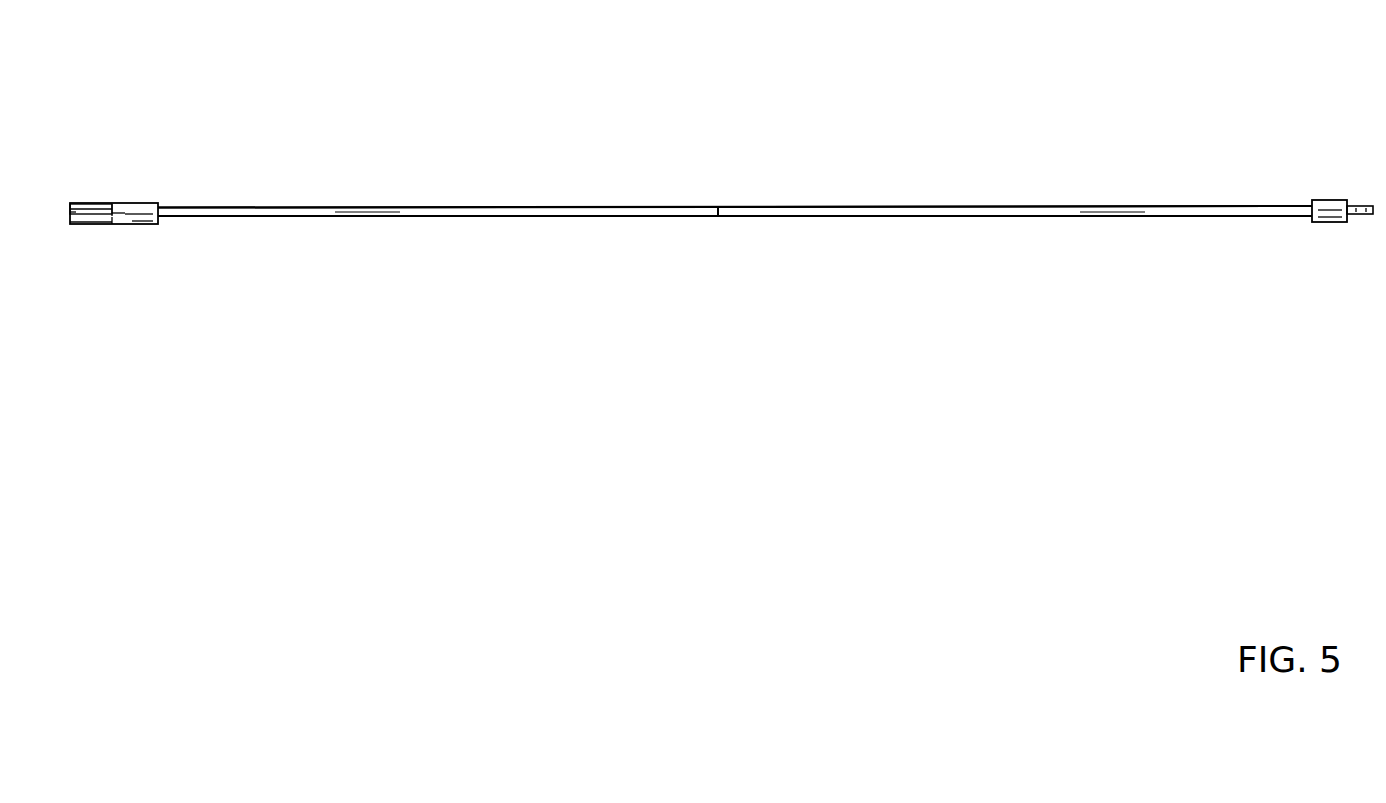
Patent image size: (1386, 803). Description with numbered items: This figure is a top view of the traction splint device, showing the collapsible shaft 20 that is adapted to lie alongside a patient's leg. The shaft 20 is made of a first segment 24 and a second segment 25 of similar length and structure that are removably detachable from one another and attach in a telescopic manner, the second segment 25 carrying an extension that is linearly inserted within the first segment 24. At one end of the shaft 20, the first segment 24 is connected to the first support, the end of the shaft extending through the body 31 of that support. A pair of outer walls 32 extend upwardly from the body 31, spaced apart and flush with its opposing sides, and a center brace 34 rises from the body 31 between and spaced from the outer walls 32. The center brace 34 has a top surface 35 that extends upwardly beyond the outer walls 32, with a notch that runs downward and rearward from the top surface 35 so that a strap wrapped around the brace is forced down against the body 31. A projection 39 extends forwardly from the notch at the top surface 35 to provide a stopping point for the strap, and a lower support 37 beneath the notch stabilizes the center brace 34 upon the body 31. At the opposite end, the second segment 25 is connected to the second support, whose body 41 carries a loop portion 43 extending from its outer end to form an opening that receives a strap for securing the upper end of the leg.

The collapsible shaft 20 is at (718, 300).
The first segment 24 is at (580, 208).
The second segment 25 is at (822, 210).
The body 31 is at (138, 224).
The outer walls 32 is at (72, 205).
The center brace 34 is at (123, 205).
The top surface 35 is at (128, 198).
The lower support 37 is at (67, 215).
The projection 39 is at (82, 203).
The body 41 is at (1323, 222).
The loop portion 43 is at (1362, 204).